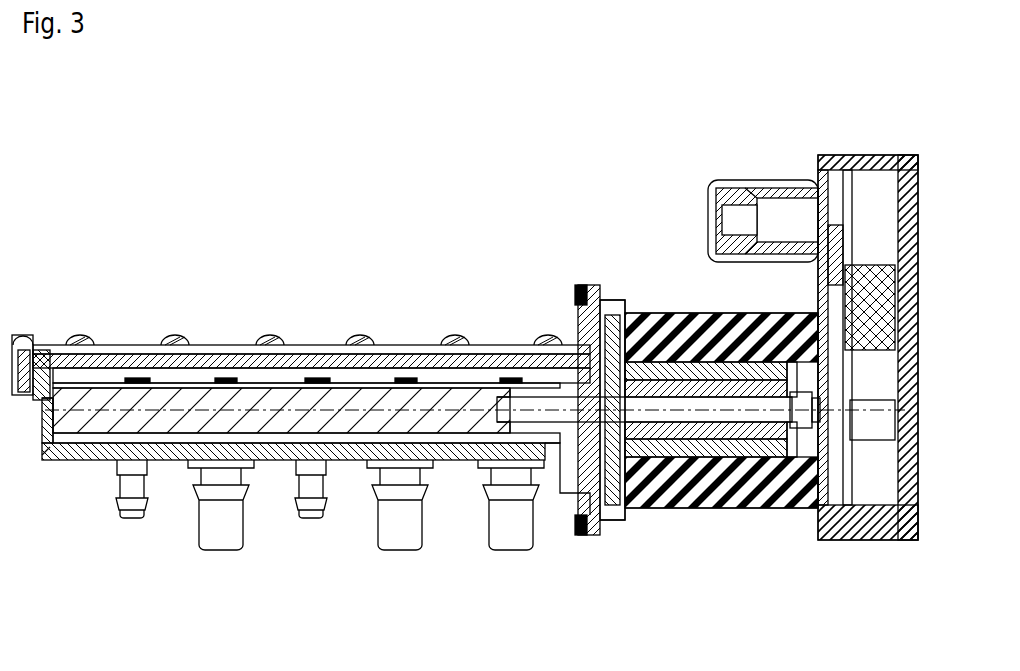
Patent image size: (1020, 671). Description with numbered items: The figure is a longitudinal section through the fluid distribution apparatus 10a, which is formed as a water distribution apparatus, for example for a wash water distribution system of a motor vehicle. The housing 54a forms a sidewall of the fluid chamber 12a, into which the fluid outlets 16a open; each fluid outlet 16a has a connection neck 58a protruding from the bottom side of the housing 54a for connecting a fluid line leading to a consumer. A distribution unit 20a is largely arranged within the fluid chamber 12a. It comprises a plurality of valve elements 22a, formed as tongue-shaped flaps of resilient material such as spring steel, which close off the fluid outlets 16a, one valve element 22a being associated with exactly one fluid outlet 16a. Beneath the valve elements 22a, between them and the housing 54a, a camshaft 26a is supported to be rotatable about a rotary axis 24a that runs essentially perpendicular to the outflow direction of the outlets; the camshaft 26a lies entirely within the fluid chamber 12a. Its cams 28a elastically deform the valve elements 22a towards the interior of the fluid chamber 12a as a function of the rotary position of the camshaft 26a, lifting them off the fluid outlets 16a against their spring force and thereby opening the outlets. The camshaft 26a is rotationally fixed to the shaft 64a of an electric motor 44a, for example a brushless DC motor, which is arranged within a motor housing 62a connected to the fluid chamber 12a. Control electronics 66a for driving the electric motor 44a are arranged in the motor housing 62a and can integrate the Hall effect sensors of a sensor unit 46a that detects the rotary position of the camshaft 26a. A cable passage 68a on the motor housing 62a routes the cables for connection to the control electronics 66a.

The fluid distribution apparatus 10a is at (597, 185).
The fluid chamber 12a is at (148, 380).
The fluid outlets 16a is at (330, 558).
The distribution unit 20a is at (428, 378).
The valve elements 22a is at (312, 385).
The rotary axis 24a is at (106, 407).
The camshaft 26a is at (235, 398).
The cams 28a is at (125, 440).
The electric motor 44a is at (720, 505).
The sensor unit 46a is at (869, 405).
The housing 54a is at (178, 455).
The connection neck 58a is at (395, 520).
The motor housing 62a is at (658, 320).
The shaft 64a is at (566, 397).
The control electronics 66a is at (882, 462).
The cable passage 68a is at (745, 195).